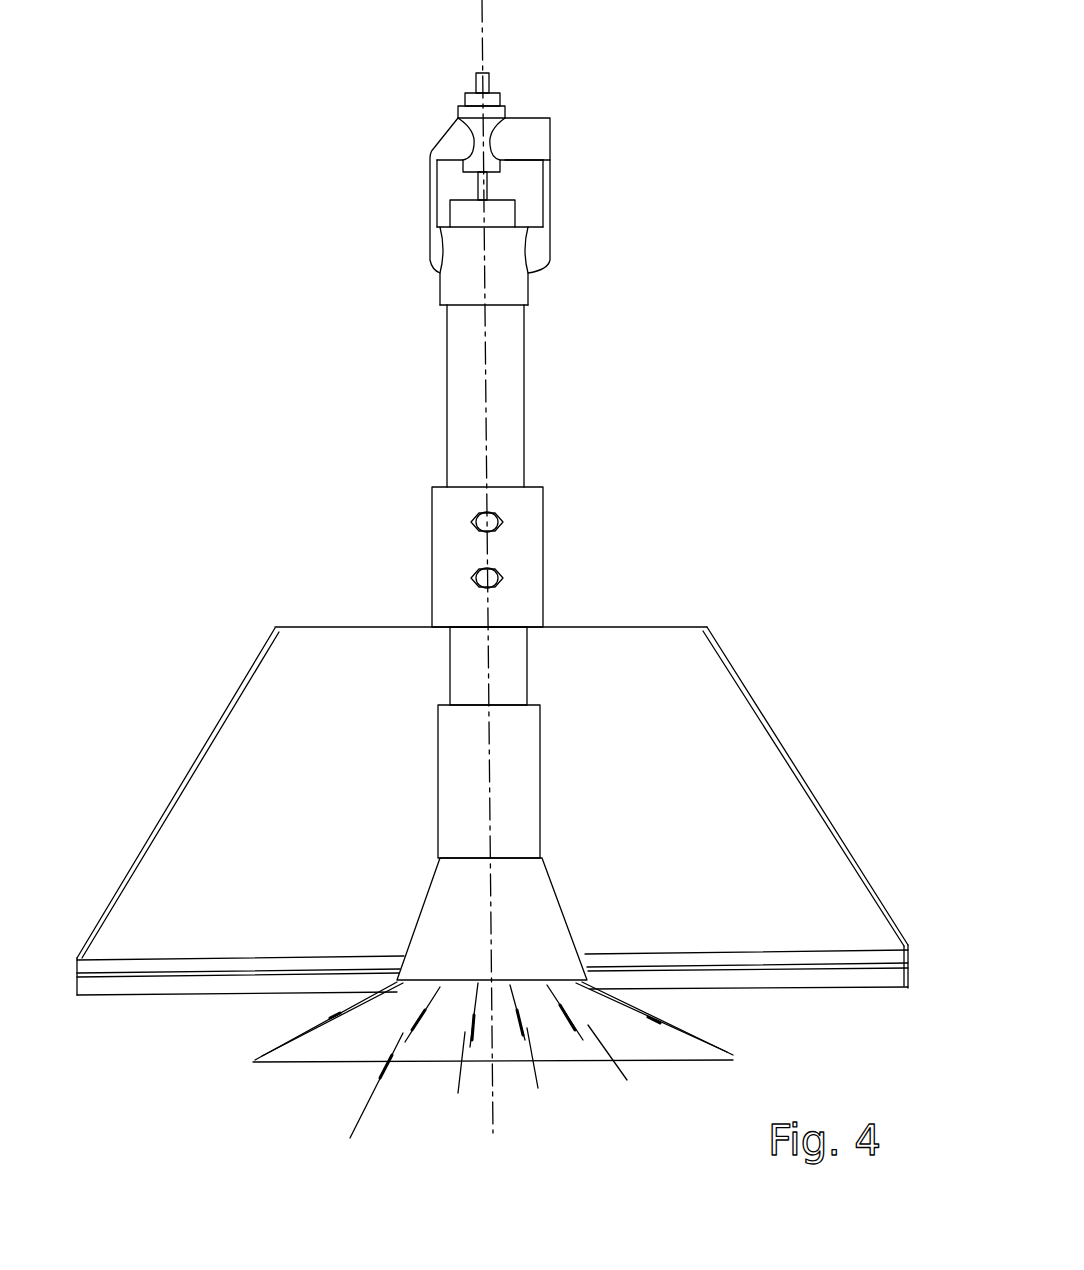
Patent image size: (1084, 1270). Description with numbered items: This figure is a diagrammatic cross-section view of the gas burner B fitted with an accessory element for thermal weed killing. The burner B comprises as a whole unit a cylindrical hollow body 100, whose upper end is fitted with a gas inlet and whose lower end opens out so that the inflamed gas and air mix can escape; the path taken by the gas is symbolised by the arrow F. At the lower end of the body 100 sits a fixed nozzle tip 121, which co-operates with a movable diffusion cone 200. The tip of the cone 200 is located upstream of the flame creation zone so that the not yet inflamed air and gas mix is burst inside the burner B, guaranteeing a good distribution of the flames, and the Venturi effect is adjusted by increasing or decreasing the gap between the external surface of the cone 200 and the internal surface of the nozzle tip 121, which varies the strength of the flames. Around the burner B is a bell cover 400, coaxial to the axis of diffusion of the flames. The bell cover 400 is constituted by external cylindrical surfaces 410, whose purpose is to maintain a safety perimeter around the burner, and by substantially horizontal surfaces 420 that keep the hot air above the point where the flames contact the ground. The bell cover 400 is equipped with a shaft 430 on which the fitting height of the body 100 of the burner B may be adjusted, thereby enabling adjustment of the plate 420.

The cylindrical hollow body 100 is at (518, 370).
The shaft 430 is at (532, 557).
The bell cover 400 is at (492, 769).
The substantially horizontal surfaces 420 is at (490, 1009).
The external cylindrical surfaces 410 is at (878, 998).
The fixed nozzle tip 121 is at (560, 932).
The diffusion cone 200 is at (493, 1067).
The arrow symbolising the path of the gas F is at (365, 1093).
The burner B is at (370, 420).